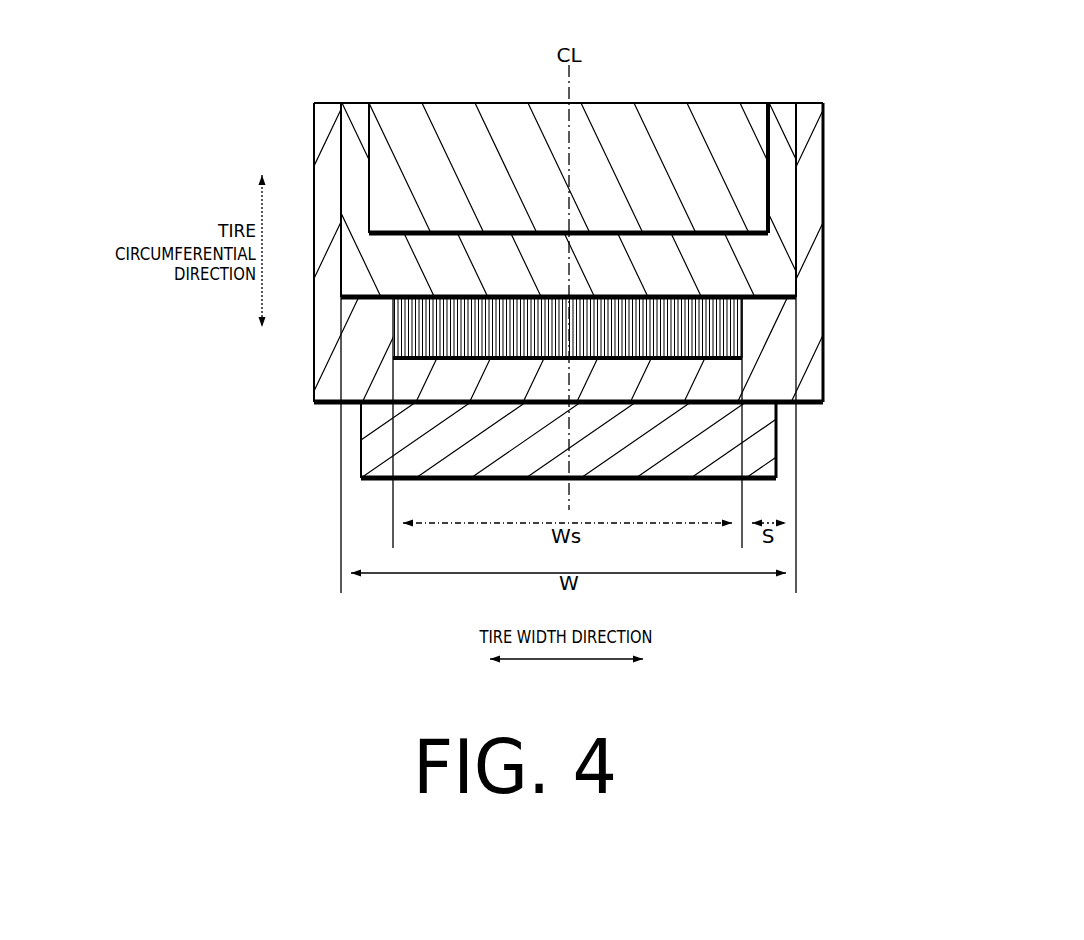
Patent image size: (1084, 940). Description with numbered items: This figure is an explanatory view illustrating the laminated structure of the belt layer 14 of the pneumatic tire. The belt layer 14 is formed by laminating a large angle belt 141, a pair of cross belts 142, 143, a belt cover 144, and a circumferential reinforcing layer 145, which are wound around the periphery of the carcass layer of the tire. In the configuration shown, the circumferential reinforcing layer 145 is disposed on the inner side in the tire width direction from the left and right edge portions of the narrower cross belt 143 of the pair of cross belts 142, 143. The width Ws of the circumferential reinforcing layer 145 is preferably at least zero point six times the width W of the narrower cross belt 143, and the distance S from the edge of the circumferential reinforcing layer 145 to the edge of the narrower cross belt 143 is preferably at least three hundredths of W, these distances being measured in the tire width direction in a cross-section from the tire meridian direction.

The belt layer 14 is at (567, 253).
The large angle belt 141 is at (776, 440).
The cross belt 142 is at (823, 374).
The cross belt 143 is at (796, 260).
The belt cover 144 is at (768, 205).
The circumferential reinforcing layer 145 is at (742, 331).